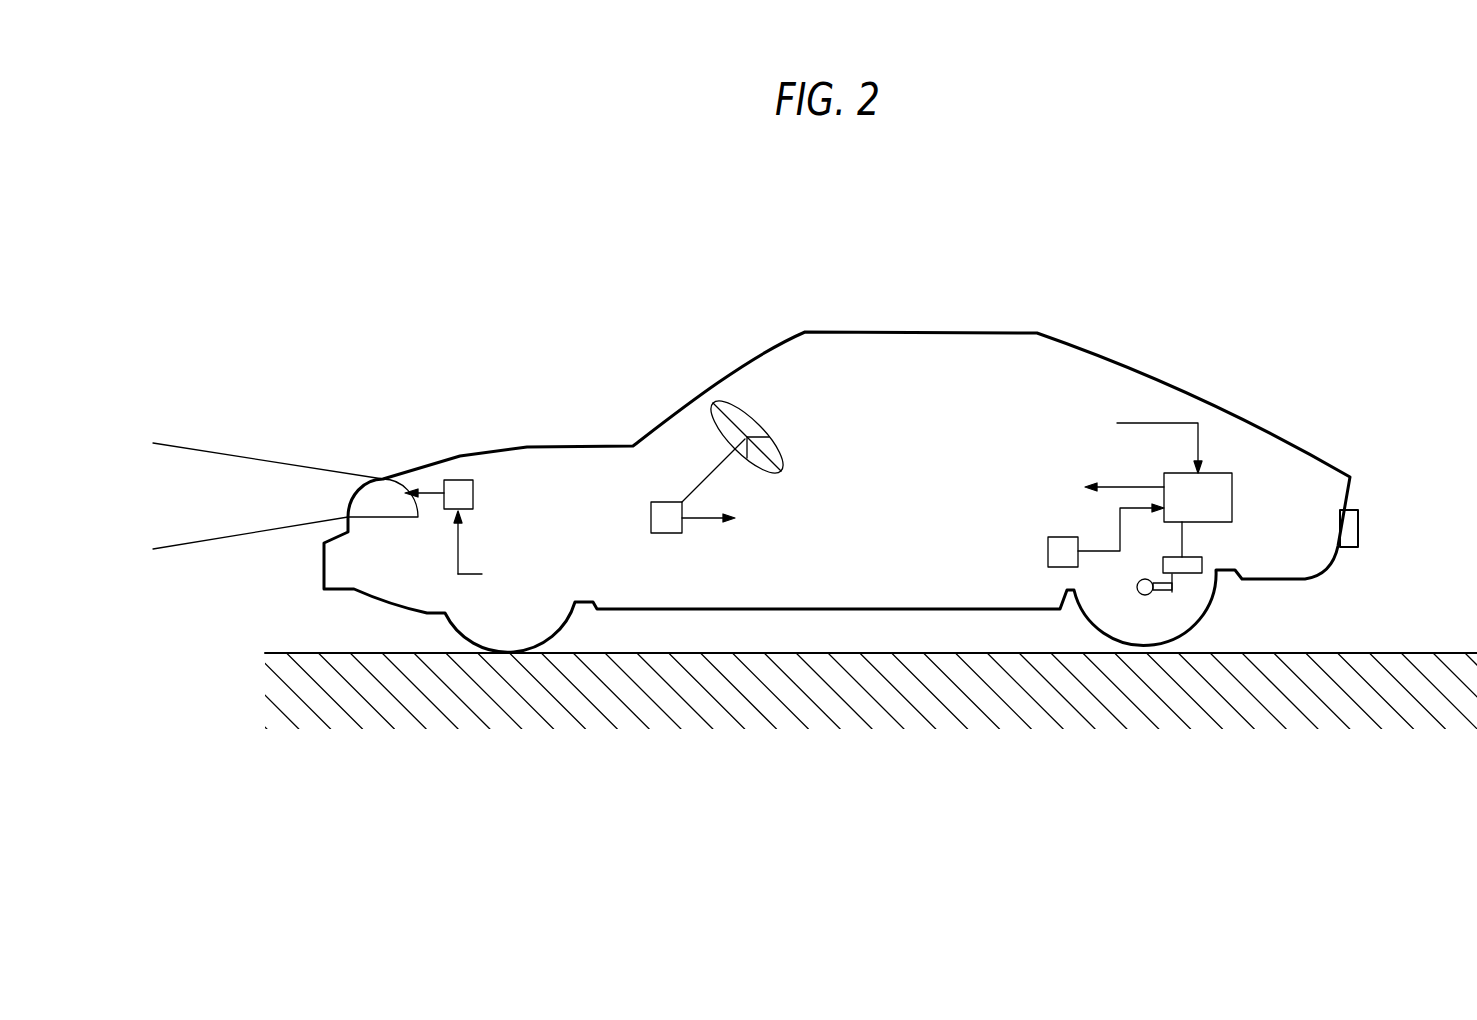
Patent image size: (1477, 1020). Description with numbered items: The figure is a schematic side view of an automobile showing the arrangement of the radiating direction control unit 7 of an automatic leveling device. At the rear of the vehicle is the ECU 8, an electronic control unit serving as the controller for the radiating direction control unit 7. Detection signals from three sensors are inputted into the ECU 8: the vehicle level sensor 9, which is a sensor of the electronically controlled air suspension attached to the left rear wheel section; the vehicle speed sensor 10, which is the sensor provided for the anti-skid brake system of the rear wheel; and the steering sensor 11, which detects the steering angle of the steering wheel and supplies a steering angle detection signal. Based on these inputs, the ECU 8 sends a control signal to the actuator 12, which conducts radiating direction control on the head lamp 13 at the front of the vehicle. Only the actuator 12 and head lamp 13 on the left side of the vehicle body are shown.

The radiating direction control unit 7 is at (1275, 283).
The ECU 8 is at (1232, 497).
The vehicle level sensor 9 is at (1202, 560).
The vehicle speed sensor 10 is at (1048, 552).
The steering sensor 11 is at (651, 517).
The actuator 12 is at (475, 493).
The head lamp 13 is at (383, 492).